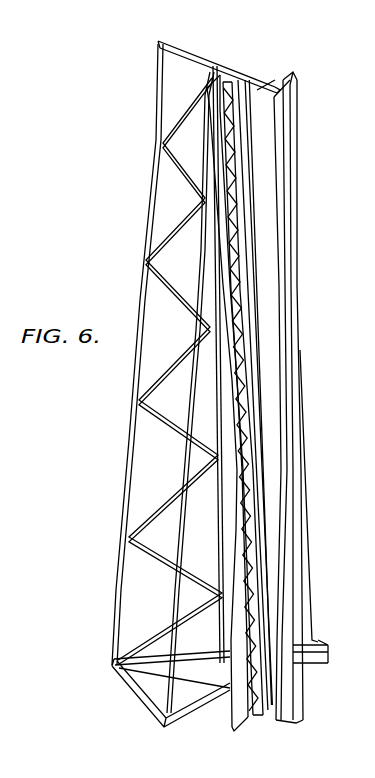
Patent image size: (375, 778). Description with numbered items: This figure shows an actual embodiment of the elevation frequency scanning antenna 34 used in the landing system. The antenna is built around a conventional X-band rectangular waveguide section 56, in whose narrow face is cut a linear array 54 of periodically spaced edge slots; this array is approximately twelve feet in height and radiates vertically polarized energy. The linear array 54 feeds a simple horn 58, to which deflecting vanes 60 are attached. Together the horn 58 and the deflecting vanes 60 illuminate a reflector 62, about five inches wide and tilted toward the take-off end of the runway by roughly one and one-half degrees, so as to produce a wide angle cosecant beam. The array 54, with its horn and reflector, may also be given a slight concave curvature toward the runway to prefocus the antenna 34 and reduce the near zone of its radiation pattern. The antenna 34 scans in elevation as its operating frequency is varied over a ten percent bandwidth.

The elevation frequency scanning antenna 34 is at (352, 364).
The linear array 54 is at (238, 190).
The rectangular waveguide section 56 is at (207, 58).
The horn 58 is at (217, 72).
The deflecting vanes 60 is at (265, 75).
The reflector 62 is at (287, 78).